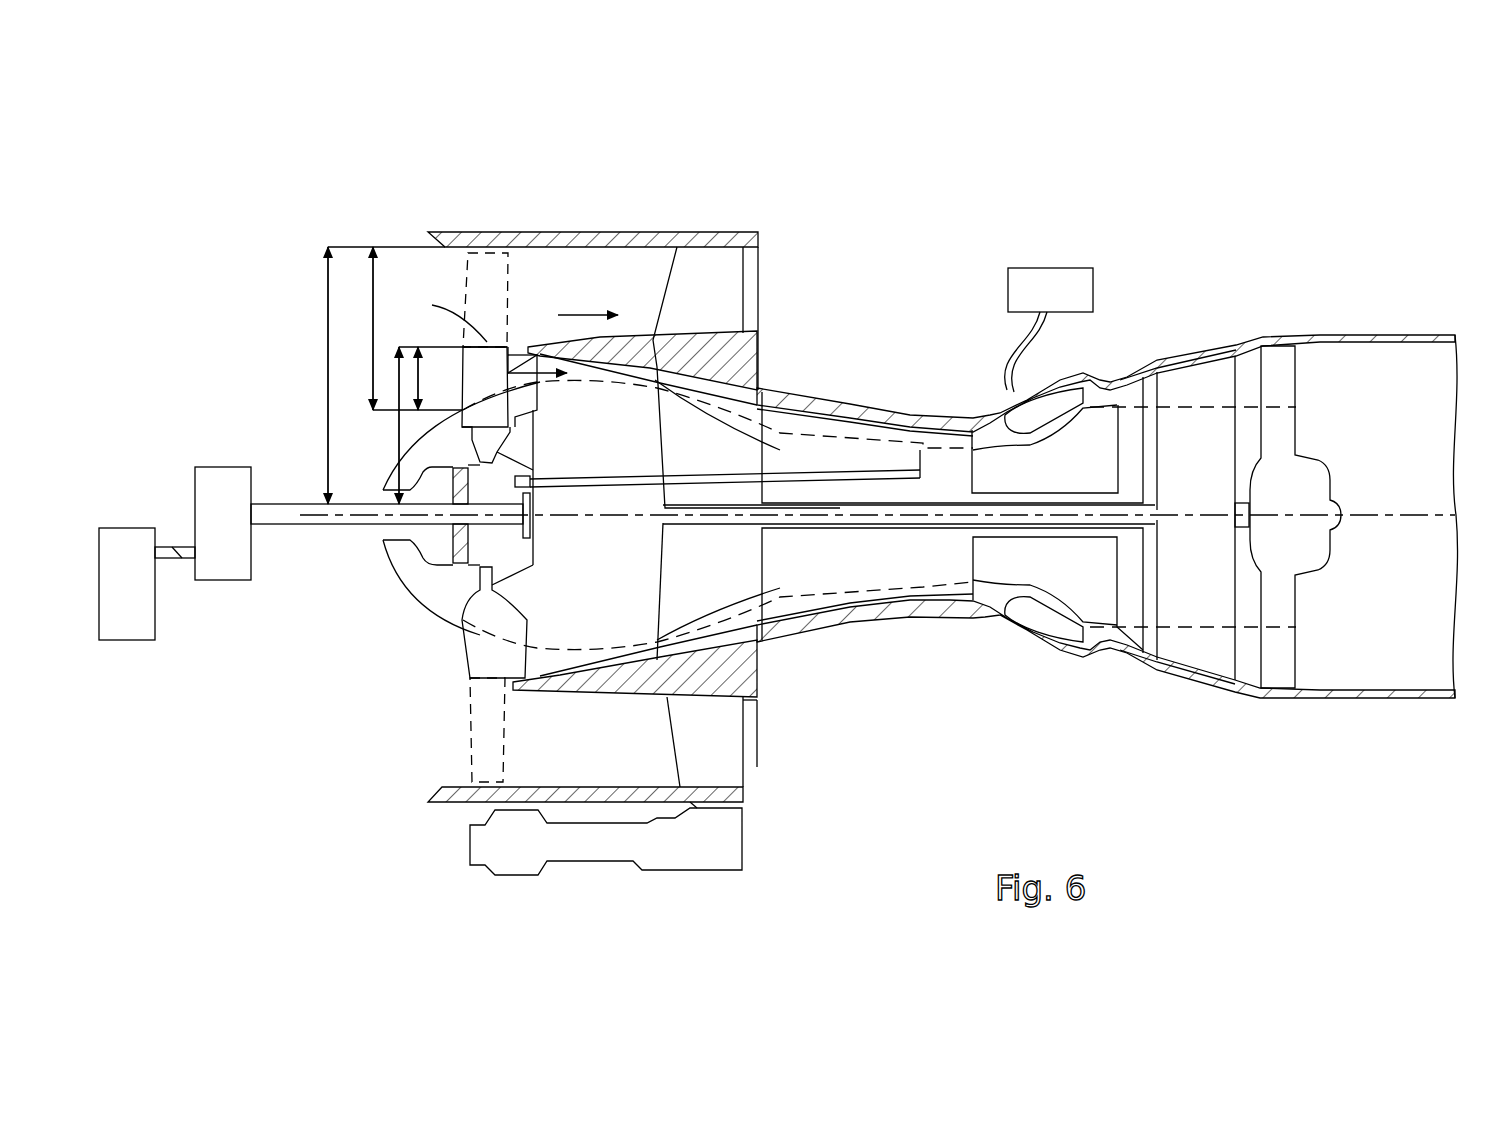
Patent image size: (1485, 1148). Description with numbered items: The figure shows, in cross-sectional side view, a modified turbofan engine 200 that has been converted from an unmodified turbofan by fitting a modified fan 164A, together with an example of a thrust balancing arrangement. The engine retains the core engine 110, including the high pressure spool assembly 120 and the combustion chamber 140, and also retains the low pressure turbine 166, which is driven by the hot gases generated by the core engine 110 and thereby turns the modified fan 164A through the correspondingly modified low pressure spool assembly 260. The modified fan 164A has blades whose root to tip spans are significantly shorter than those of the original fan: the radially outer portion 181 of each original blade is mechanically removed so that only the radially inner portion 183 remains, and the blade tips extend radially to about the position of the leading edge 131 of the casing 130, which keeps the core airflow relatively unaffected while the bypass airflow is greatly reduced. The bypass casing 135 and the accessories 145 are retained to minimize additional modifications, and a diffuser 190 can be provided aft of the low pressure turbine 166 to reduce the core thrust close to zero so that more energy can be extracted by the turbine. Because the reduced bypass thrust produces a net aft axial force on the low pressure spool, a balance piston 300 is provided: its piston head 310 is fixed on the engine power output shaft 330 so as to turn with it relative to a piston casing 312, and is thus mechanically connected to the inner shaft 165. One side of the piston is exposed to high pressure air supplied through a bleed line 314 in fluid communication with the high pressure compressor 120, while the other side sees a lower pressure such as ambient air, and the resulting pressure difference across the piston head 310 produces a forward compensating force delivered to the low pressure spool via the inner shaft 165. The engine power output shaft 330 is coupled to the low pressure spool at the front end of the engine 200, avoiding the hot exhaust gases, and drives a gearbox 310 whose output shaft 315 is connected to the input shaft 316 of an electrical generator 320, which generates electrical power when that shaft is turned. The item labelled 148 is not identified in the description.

The modified turbofan engine 200 is at (778, 483).
The core engine 110 is at (850, 402).
The high pressure spool assembly 120 is at (947, 478).
The casing 130 is at (868, 425).
The leading edge 131 is at (527, 347).
The bypass casing 135 is at (693, 232).
The combustion chamber 140 is at (1088, 375).
The accessories 145 is at (705, 845).
The sensor 148 is at (1070, 304).
The modified fan 164A is at (456, 636).
The inner shaft 165 is at (607, 482).
The low pressure turbine 166 is at (1216, 380).
The radially outer portion 181 is at (462, 282).
The radially inner portion 183 is at (462, 358).
The diffuser 190 is at (1362, 333).
The modified low pressure spool assembly 260 is at (728, 506).
The balance piston 300 is at (344, 552).
The piston head 310 is at (241, 530).
The piston casing 312 is at (450, 548).
The bleed line 314 is at (590, 510).
The output shaft of the gearbox 315 is at (188, 560).
The input shaft 316 is at (170, 545).
The electrical generator 320 is at (146, 590).
The engine power output shaft 330 is at (280, 526).